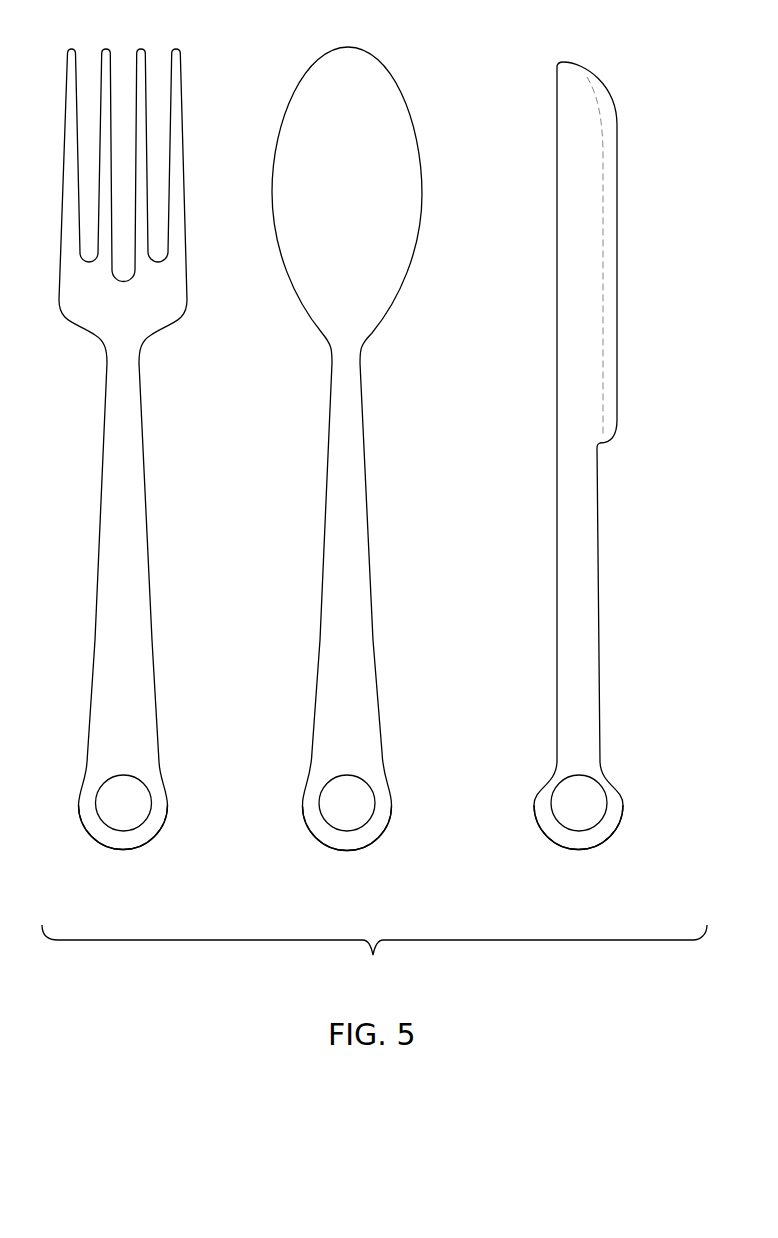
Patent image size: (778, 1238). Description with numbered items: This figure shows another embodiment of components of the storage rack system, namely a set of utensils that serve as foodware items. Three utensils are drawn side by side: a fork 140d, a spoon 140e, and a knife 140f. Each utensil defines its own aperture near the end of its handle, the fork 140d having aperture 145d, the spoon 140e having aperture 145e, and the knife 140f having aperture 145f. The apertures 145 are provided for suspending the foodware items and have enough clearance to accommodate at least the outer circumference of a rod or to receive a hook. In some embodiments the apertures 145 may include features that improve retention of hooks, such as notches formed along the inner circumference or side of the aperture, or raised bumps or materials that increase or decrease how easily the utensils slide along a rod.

The fork 140d is at (158, 740).
The spoon 140e is at (379, 728).
The knife 140f is at (600, 714).
The apertures 145 is at (174, 804).
The aperture 145d is at (125, 831).
The aperture 145e is at (348, 831).
The aperture 145f is at (580, 829).